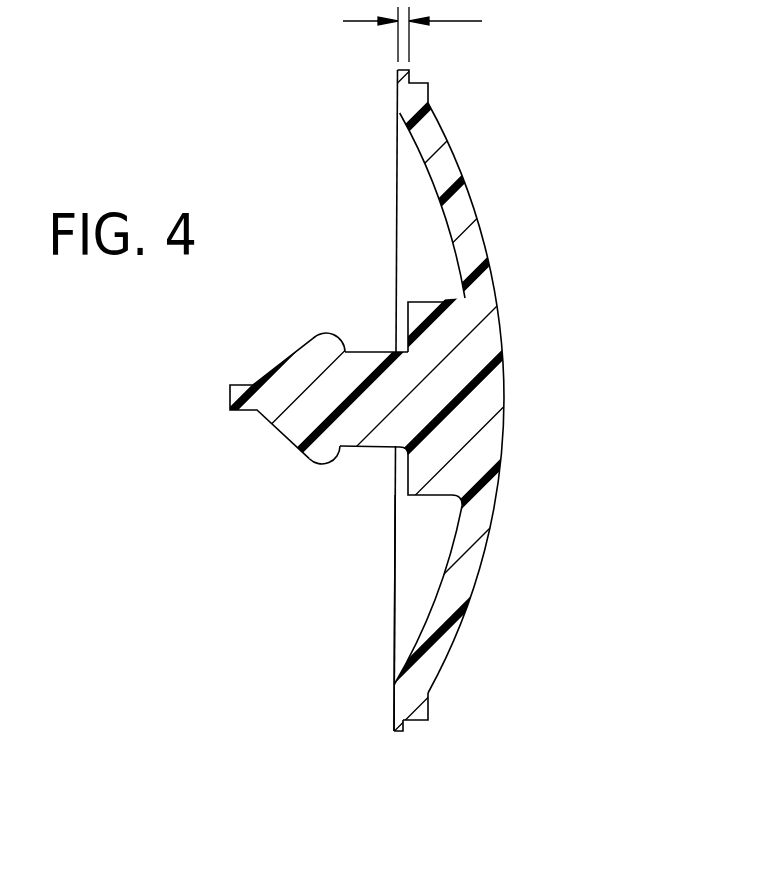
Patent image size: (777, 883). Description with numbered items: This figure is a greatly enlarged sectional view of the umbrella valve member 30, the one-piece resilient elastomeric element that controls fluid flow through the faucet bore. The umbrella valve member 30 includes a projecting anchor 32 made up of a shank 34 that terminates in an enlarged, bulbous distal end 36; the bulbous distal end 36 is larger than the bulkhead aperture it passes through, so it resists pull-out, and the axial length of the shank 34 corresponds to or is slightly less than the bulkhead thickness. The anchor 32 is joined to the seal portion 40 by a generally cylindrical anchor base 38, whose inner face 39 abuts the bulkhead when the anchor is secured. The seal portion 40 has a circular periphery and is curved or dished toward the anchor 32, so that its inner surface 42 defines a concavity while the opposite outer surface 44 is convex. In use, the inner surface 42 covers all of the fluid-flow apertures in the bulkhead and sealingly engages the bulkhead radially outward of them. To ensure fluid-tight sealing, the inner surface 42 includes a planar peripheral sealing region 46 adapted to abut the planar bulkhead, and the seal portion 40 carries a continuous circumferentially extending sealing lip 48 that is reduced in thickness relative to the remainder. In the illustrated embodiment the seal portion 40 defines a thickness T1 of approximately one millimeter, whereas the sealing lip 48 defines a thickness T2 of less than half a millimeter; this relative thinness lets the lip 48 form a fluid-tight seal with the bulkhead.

The umbrella valve member 30 is at (476, 134).
The projecting anchor 32 is at (362, 334).
The shank 34 is at (362, 466).
The bulbous distal end 36 is at (288, 472).
The anchor base 38 is at (420, 291).
The inner face 39 is at (384, 500).
The seal portion 40 is at (398, 582).
The inner surface 42 is at (430, 560).
The outer surface 44 is at (482, 608).
The planar peripheral sealing region 46 is at (380, 699).
The sealing lip 48 is at (380, 743).
The thickness of the seal portion T1 is at (493, 208).
The thickness of the sealing lip T2 is at (430, 34).